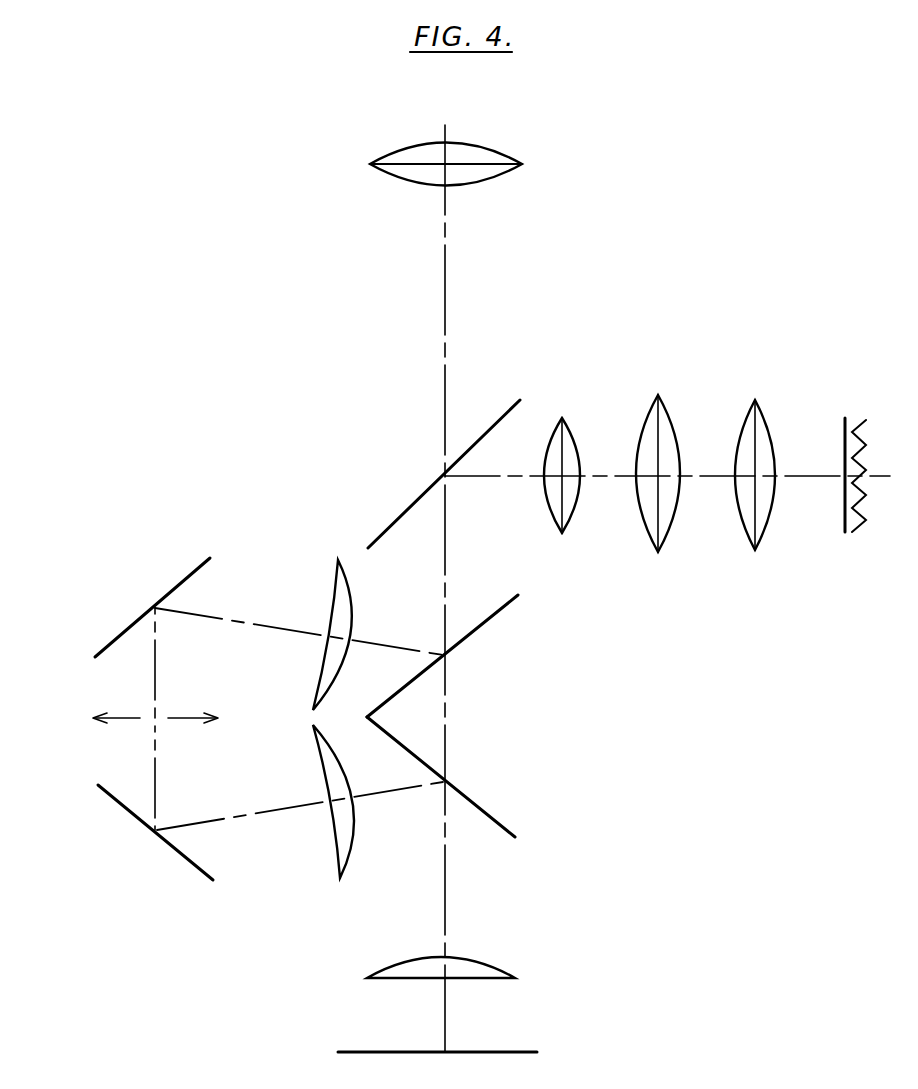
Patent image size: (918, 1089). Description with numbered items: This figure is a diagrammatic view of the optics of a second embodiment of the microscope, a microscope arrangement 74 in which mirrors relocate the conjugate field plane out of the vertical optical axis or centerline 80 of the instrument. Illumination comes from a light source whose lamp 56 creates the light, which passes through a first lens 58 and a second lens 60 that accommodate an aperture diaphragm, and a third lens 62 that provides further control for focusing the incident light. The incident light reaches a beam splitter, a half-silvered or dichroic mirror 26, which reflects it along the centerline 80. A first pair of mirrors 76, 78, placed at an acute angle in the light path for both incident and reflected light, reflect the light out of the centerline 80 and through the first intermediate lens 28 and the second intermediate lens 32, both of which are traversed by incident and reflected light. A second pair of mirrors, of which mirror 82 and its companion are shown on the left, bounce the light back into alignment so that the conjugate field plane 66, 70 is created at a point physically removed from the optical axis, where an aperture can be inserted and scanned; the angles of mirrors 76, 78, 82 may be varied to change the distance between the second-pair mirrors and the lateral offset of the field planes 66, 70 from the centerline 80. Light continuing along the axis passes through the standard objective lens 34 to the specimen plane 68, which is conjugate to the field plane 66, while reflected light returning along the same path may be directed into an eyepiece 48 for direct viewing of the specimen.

The beam splitter 26 is at (398, 515).
The first intermediate lens 28 is at (336, 576).
The second intermediate lens 32 is at (330, 841).
The standard objective lens 34 is at (483, 960).
The eyepiece 48 is at (498, 157).
The lamp 56 is at (858, 510).
The first lens 58 is at (763, 413).
The second lens 60 is at (670, 413).
The third lens 62 is at (566, 424).
The field plane 66 is at (117, 719).
The specimen plane 68 is at (508, 1051).
The conjugate field plane 70 is at (193, 718).
The microscope arrangement 74 is at (578, 243).
The first mirror 76 is at (488, 623).
The second mirror of first pair 78 is at (490, 816).
The optical axis 80 is at (444, 298).
The second-pair mirror 82 is at (173, 848).